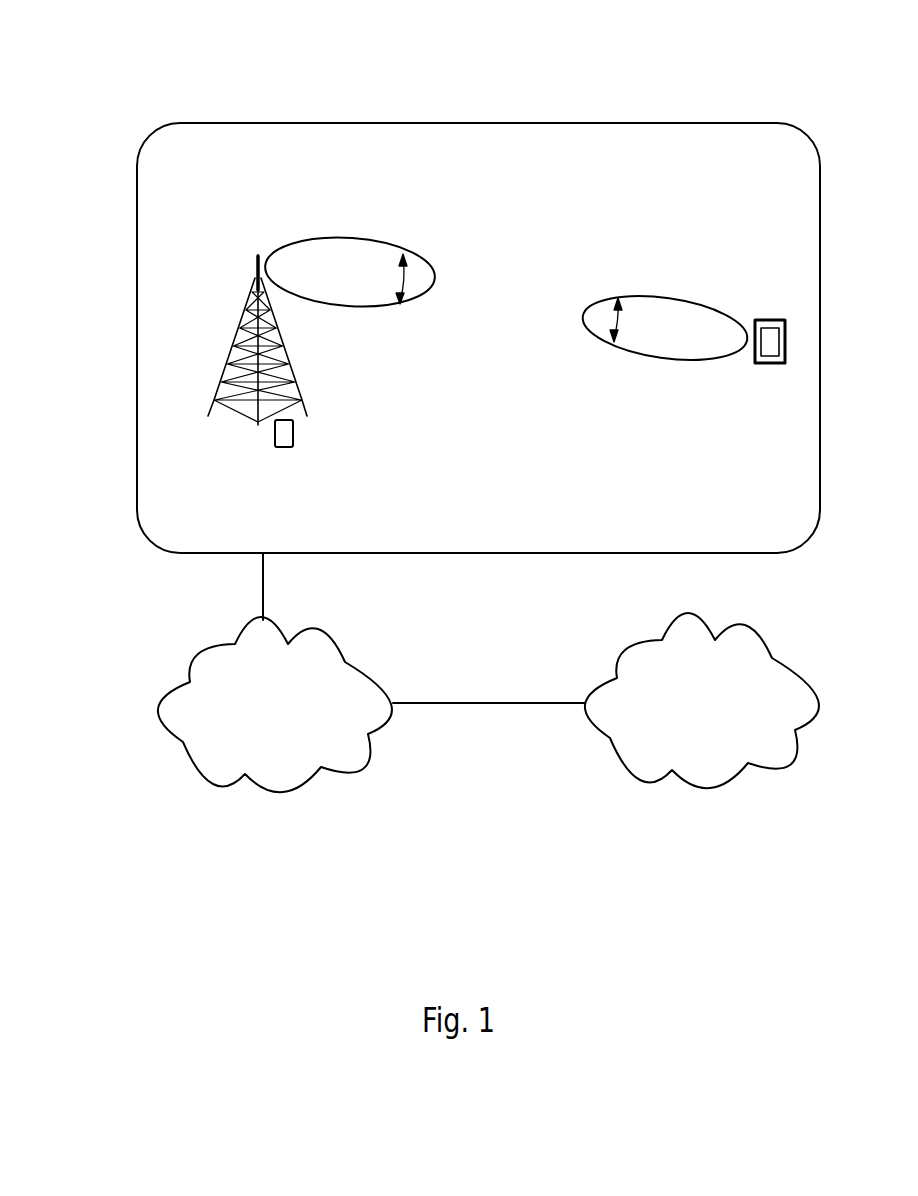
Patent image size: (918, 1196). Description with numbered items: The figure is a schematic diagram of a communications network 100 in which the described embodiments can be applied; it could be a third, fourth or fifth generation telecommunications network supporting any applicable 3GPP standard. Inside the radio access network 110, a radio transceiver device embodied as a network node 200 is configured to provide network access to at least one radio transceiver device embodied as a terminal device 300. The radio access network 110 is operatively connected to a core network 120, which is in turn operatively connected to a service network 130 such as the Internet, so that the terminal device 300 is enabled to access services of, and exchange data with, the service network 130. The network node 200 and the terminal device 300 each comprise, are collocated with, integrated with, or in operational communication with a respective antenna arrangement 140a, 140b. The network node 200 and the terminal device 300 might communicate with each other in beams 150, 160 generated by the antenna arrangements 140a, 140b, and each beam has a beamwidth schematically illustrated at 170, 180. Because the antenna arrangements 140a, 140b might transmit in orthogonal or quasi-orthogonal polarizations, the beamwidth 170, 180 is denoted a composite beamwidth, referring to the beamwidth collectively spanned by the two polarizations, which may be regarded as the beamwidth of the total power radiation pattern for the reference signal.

The communications network 100 is at (214, 67).
The radio access network 110 is at (137, 389).
The core network 120 is at (302, 727).
The service network 130 is at (728, 722).
The antenna arrangement 140a is at (256, 270).
The antenna arrangement 140b is at (763, 320).
The beam 150 is at (433, 281).
The beam 160 is at (584, 312).
The beamwidth 170 is at (400, 283).
The beamwidth 180 is at (607, 306).
The network node 200 is at (275, 440).
The terminal device 300 is at (771, 364).